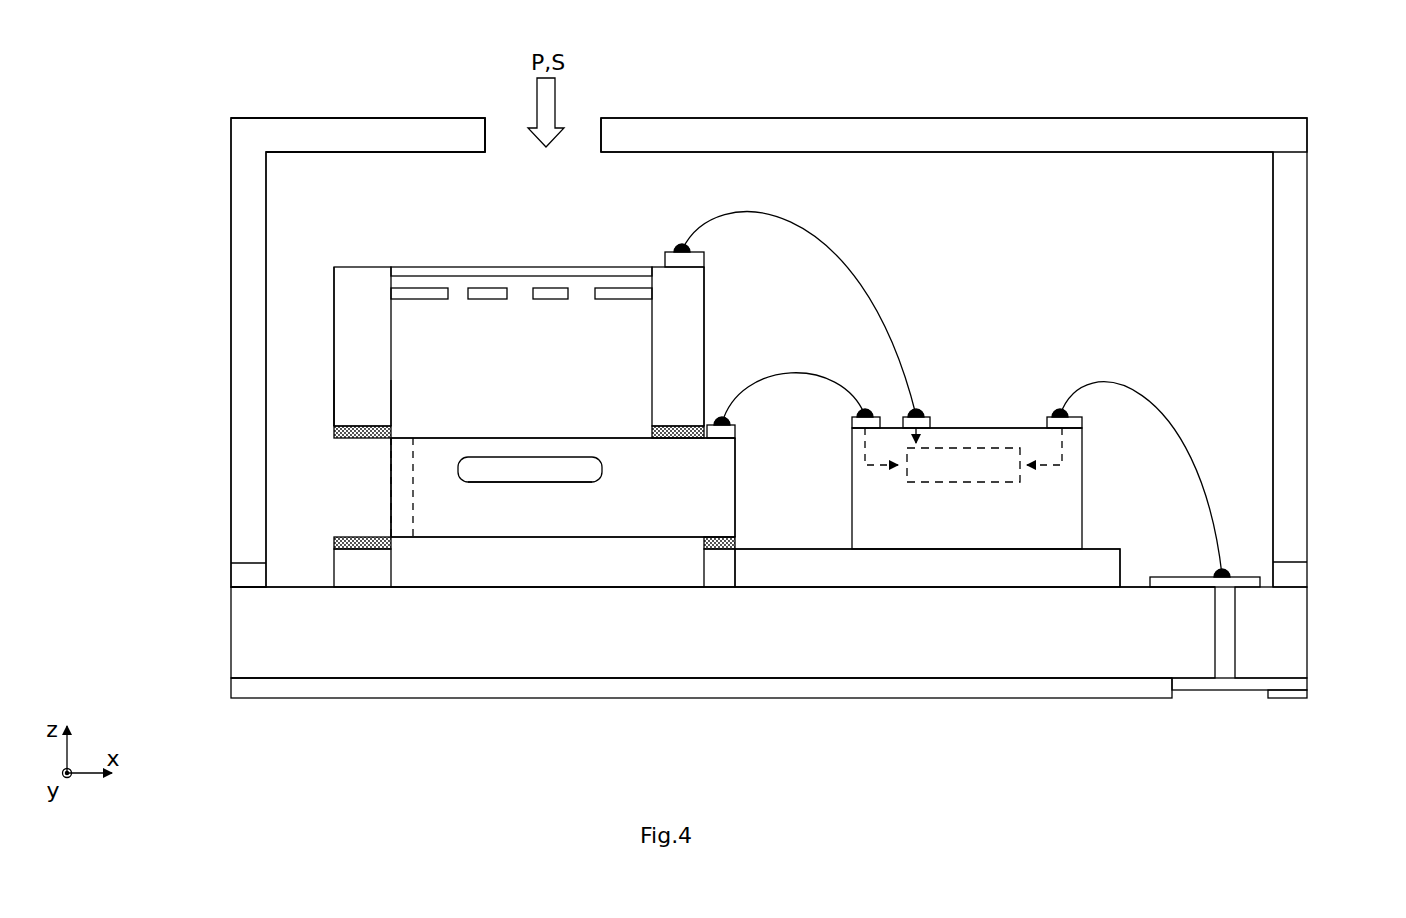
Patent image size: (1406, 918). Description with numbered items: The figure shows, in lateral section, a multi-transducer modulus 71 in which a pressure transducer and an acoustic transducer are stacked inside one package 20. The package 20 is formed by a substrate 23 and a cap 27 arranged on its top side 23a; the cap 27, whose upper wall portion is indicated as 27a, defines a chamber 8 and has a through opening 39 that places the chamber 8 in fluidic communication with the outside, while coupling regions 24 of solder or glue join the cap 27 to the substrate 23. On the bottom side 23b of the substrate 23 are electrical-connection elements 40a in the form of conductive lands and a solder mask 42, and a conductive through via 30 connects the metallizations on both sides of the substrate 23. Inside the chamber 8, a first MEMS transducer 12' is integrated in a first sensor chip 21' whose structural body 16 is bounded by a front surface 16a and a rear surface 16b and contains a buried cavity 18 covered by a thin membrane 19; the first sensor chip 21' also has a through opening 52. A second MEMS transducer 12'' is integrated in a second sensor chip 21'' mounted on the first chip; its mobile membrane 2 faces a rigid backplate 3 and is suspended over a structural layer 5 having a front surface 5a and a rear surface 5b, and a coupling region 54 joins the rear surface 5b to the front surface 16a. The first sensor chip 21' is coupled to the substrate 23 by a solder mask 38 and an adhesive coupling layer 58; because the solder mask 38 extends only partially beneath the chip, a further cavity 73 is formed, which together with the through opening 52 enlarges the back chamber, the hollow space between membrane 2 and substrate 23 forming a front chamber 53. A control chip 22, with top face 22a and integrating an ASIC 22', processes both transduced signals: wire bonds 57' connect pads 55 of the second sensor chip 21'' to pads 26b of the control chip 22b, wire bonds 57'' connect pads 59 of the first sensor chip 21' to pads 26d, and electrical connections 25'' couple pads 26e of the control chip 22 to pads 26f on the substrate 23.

The multi-transducer modulus 71 is at (194, 139).
The package 20 is at (228, 293).
The cap 27 is at (357, 130).
The housing lid top wall portion 27a is at (1079, 157).
The through opening 39 is at (587, 131).
The chamber 8 is at (1248, 369).
The coupling regions 24 is at (243, 578).
The substrate 23 is at (243, 645).
The top side 23a is at (295, 584).
The bottom side 23b is at (316, 684).
The solder mask 42 is at (628, 683).
The conductive through via 30 is at (1228, 640).
The electrical-connection elements 40a is at (1217, 693).
The front surface 5a is at (357, 262).
The structural layer 5 is at (678, 346).
The rear surface 5b is at (376, 434).
The second MEMS transducer 12'' is at (313, 346).
The first MEMS transducer 12' is at (267, 487).
The second sensor chip 21'' is at (738, 346).
The first sensor chip 21' is at (766, 487).
The membrane 2 is at (553, 273).
The rigid plate 3 is at (497, 299).
The front chamber 53 is at (521, 314).
The pads 55 is at (702, 259).
The coupling region 54 is at (345, 428).
The structural body 16 is at (563, 487).
The front surface 16a is at (607, 432).
The rear surface 16b is at (676, 543).
The through opening 52 is at (403, 434).
The buried cavity 18 is at (501, 461).
The membrane 19 is at (554, 446).
The pads 59 is at (729, 431).
The coupling layer 58 is at (353, 553).
The cavity 73 is at (547, 568).
The wire bonds 57' is at (799, 306).
The wire bonds 57'' is at (793, 367).
The electrical connections 25'' is at (1141, 454).
The control chip 22 is at (930, 585).
The ASIC top surface 22a is at (1024, 423).
The ASIC 22' is at (963, 422).
The control chip 22b is at (969, 554).
The solder mask 38 is at (1055, 575).
The pads 26b is at (926, 414).
The pads 26d is at (848, 422).
The pads 26e is at (1047, 412).
The pads 26f is at (1250, 580).